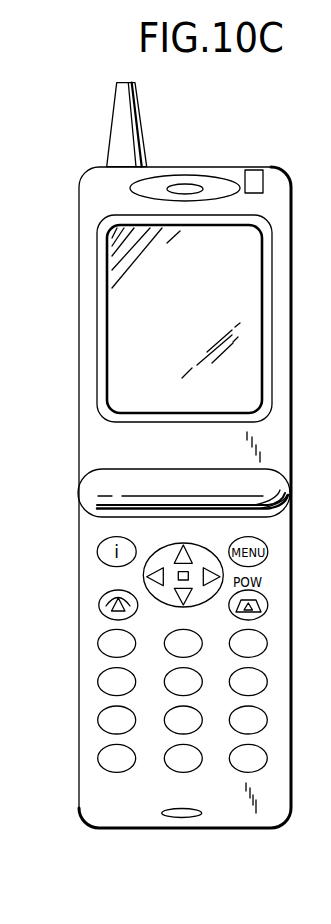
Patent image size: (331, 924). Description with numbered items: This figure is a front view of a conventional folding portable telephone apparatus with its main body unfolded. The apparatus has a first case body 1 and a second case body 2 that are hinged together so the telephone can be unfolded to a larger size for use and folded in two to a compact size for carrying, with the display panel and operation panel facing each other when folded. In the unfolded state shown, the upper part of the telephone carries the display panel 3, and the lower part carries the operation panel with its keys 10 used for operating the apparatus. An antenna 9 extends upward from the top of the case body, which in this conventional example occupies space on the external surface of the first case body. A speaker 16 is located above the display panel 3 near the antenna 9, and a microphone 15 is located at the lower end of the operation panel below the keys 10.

The first case body 1 is at (95, 790).
The second case body 2 is at (98, 434).
The display 3 is at (135, 330).
The antenna 9 is at (140, 108).
The operation keys 10 is at (105, 680).
The microphone 15 is at (182, 813).
The speaker 16 is at (196, 190).